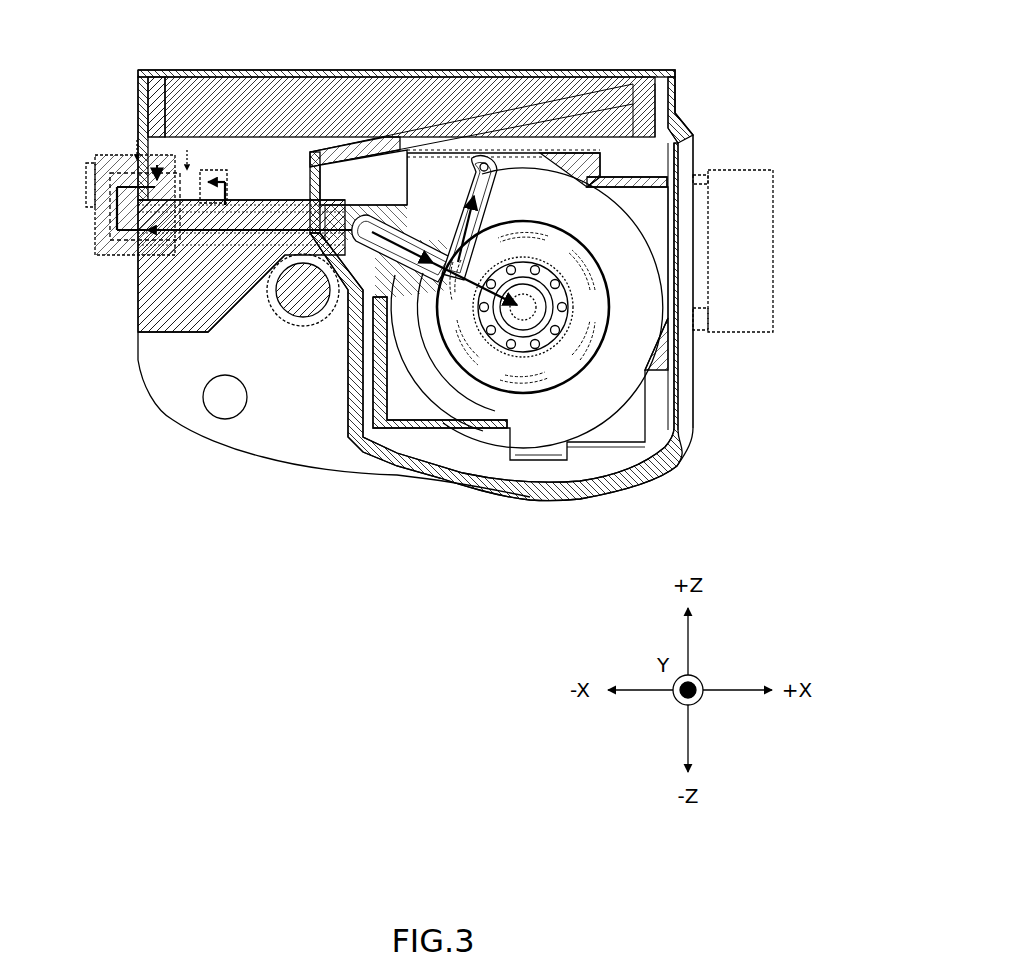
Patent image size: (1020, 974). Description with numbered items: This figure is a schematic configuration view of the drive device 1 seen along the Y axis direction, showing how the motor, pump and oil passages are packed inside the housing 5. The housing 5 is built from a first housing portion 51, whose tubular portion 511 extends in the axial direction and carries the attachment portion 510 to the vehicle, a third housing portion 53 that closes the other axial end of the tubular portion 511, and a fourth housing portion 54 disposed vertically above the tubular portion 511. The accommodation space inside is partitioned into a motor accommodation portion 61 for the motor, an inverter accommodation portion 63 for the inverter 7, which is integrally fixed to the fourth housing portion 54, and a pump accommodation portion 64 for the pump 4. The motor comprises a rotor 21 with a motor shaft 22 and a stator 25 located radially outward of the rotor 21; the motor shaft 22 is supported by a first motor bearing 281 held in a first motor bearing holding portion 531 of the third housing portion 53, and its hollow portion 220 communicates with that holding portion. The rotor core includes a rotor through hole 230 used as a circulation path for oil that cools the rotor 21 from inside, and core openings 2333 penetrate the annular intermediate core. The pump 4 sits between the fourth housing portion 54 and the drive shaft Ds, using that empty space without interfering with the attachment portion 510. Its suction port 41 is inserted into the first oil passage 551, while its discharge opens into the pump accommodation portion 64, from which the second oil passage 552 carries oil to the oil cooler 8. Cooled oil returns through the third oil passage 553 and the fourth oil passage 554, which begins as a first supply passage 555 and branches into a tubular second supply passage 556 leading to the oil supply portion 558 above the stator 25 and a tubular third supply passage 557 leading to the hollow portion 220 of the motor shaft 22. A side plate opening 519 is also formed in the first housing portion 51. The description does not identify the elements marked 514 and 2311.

The drive device 1 is at (708, 73).
The pump 4 is at (95, 185).
The housing 5 is at (690, 442).
The inverter 7 is at (476, 100).
The oil cooler 8 is at (100, 240).
The rotor 21 is at (590, 290).
The motor shaft 22 is at (520, 325).
The stator 25 is at (640, 256).
The suction port 41 is at (208, 170).
The first housing portion 51 is at (150, 313).
The third housing portion 53 is at (668, 468).
The fourth housing portion 54 is at (356, 77).
The motor accommodation portion 61 is at (658, 217).
The inverter accommodation portion 63 is at (297, 166).
The pump accommodation portion 64 is at (137, 140).
The hollow portion 220 is at (515, 325).
The rotor through hole 230 is at (550, 345).
The first motor bearing 281 is at (585, 322).
The attachment portion 510 is at (225, 397).
The tubular portion 511 is at (652, 420).
The wall opening 514 is at (157, 165).
The side plate opening 519 is at (540, 462).
The first motor bearing holding portion 531 is at (565, 300).
The first oil passage 551 is at (232, 186).
The second oil passage 552 is at (130, 158).
The third oil passage 553 is at (232, 250).
The fourth oil passage 554 is at (410, 270).
The first supply passage 555 is at (368, 240).
The second supply passage 556 is at (480, 206).
The third supply passage 557 is at (440, 335).
The oil supply portion 558 is at (480, 168).
The stator core 2311 is at (555, 347).
The core opening 2333 is at (568, 347).
The drive shaft Ds is at (300, 292).